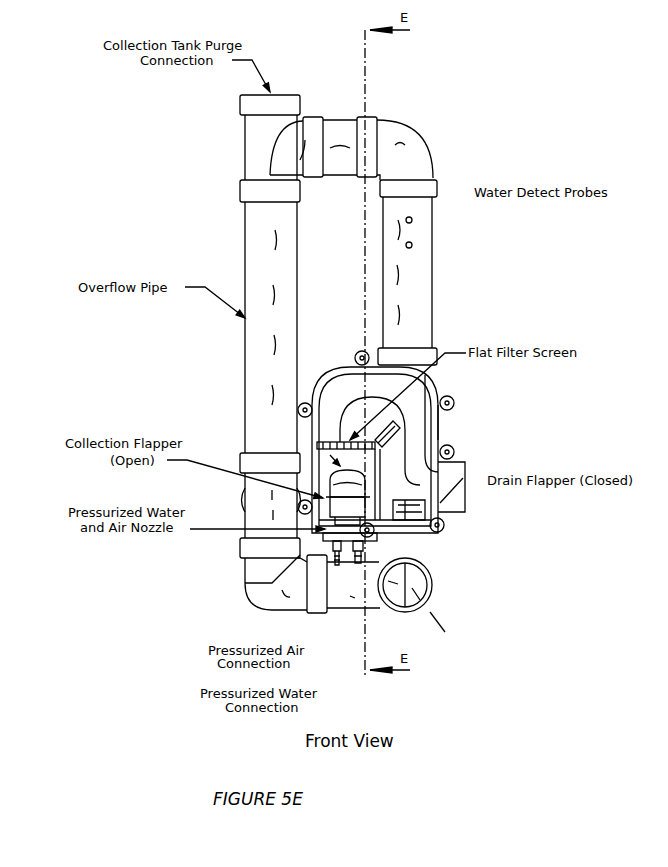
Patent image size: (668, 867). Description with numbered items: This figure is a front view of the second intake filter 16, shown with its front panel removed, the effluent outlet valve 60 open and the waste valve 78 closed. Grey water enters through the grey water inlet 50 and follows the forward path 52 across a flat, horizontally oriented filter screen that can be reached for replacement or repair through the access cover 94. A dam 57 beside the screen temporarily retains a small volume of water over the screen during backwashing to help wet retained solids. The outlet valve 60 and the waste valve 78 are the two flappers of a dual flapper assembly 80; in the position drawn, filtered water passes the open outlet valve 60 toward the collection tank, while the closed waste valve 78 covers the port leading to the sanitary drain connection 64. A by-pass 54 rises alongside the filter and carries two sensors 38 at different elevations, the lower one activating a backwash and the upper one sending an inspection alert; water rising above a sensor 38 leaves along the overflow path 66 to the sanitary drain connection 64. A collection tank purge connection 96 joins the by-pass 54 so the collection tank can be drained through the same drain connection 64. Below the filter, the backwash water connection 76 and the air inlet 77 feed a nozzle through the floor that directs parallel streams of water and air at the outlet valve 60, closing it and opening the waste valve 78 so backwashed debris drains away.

The sensor 38 is at (412, 243).
The by-pass 54 is at (436, 272).
The intake filter 16 is at (620, 312).
The access cover 94 is at (336, 463).
The effluent outlet valve 60 is at (241, 467).
The dual flapper assembly 80 is at (381, 450).
The collection tank purge connection 96 is at (243, 500).
The dam 57 is at (440, 433).
The forward path 52 is at (470, 462).
The waste valve 78 is at (423, 507).
The grey water inlet 50 is at (452, 512).
The sanitary drain connection 64 is at (433, 590).
The overflow path 66 is at (460, 664).
The air inlet 77 is at (337, 570).
The backwash water connection 76 is at (358, 570).